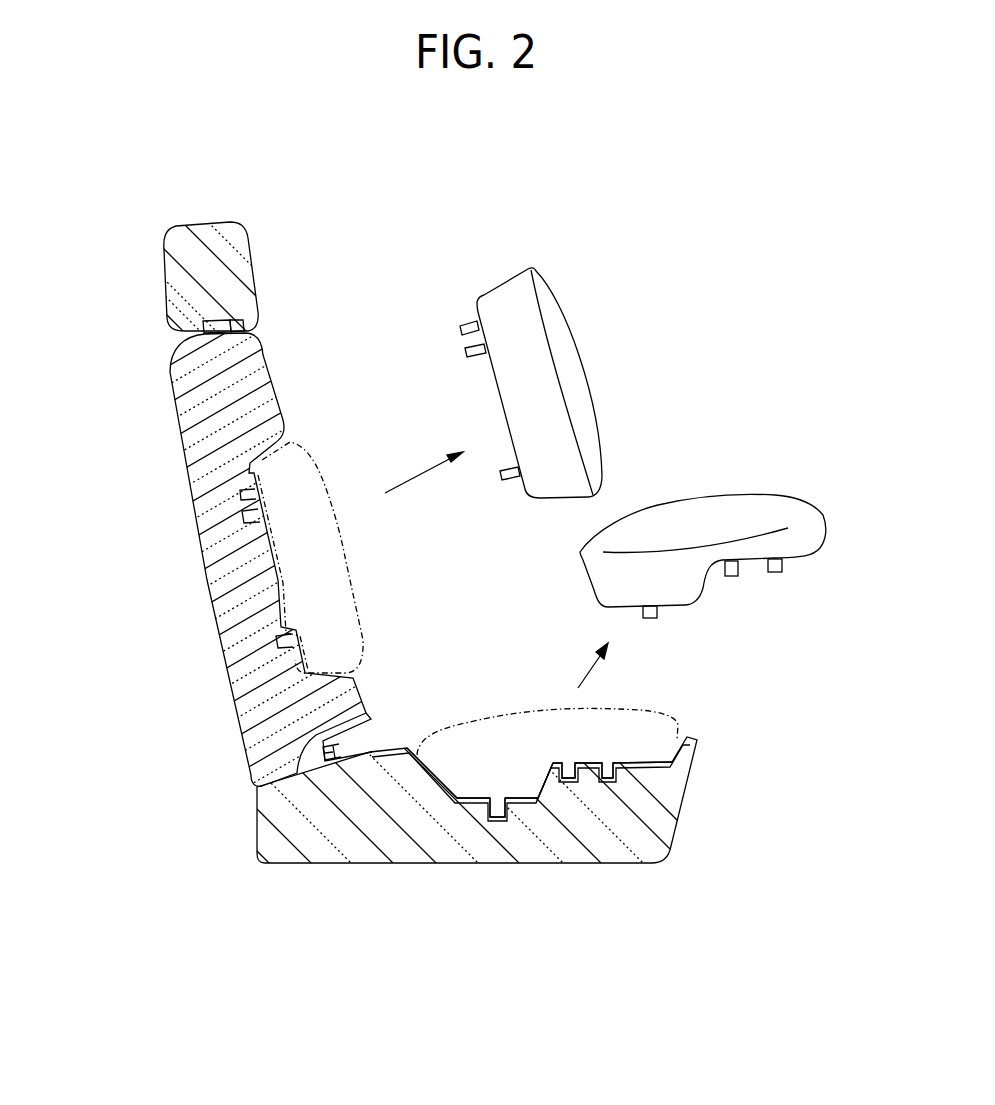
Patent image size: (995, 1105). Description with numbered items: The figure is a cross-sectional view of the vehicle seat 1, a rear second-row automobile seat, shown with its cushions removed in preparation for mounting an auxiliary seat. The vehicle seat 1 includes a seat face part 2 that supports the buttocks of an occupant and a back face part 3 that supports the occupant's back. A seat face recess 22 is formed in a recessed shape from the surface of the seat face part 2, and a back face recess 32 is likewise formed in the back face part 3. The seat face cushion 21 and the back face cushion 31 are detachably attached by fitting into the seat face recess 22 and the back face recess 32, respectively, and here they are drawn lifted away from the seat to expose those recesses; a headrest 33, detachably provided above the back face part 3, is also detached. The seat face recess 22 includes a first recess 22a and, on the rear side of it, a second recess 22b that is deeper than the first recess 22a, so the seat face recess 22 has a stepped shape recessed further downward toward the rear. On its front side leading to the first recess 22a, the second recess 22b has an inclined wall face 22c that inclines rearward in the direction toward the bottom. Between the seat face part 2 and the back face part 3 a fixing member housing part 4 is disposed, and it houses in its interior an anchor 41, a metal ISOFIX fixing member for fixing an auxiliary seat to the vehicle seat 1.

The vehicle seat 1 is at (691, 181).
The seat face part 2 is at (674, 827).
The back face part 3 is at (170, 382).
The fixing member housing part 4 is at (381, 728).
The seat face cushion 21 is at (777, 495).
The seat face recess 22 is at (623, 985).
The first recess 22a is at (610, 768).
The second recess 22b is at (460, 803).
The inclined wall face 22c is at (500, 817).
The back face cushion 31 is at (573, 350).
The back face recess 32 is at (267, 553).
The headrest 33 is at (218, 222).
The anchor 41 is at (336, 752).